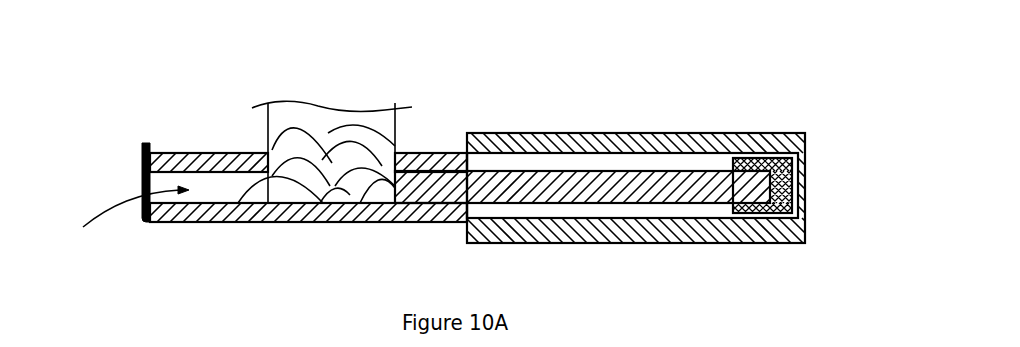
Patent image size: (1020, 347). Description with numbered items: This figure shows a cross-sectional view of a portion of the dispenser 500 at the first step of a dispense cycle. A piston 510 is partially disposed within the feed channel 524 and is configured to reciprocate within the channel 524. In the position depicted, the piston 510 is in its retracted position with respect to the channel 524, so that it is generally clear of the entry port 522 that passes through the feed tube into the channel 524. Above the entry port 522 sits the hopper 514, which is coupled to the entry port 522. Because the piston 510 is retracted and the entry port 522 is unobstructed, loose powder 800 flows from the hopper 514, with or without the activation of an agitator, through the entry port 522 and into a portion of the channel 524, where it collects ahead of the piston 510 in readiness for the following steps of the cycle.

The dispenser 500 is at (363, 59).
The piston 510 is at (605, 185).
The hopper 514 is at (316, 118).
The entry port 522 is at (245, 192).
The feed channel 524 is at (123, 224).
The loose powder 800 is at (353, 152).